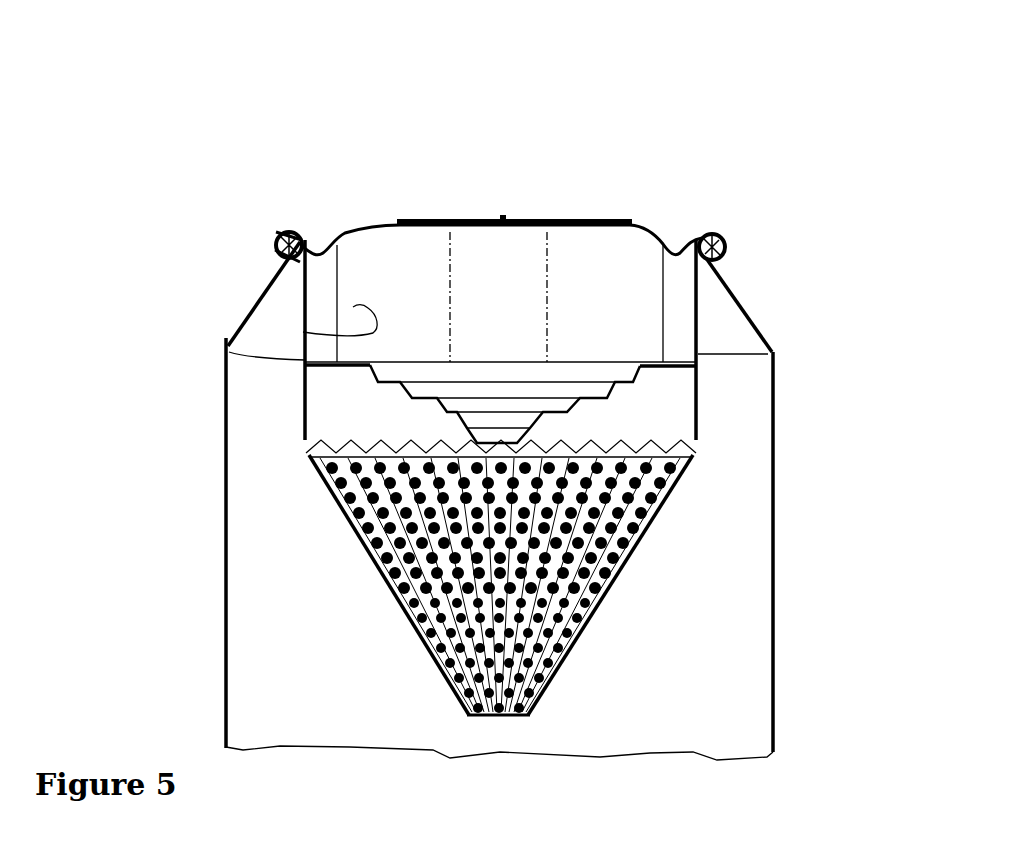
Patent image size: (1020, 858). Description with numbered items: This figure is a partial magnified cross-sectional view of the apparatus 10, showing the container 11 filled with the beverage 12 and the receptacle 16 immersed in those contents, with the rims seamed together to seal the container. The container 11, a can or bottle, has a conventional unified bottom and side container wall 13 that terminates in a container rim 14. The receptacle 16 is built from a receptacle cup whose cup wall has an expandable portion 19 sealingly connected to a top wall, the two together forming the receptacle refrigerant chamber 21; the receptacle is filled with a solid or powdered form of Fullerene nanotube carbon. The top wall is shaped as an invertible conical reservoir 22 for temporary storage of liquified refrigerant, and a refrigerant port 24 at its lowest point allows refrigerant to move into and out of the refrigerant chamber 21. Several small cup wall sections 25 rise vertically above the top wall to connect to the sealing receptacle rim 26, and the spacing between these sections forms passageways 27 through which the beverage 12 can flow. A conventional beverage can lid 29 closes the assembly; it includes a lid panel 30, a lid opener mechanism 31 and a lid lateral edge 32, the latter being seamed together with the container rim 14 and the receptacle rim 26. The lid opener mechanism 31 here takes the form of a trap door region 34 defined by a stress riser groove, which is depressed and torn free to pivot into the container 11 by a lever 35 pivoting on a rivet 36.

The apparatus 10 is at (716, 103).
The container 11 is at (752, 320).
The beverage 12 is at (737, 687).
The container wall 13 is at (777, 488).
The container rim 14 is at (273, 252).
The receptacle 16 is at (303, 383).
The expandable portion 19 is at (610, 580).
The receptacle refrigerant chamber 21 is at (345, 410).
The invertible conical reservoir 22 is at (437, 407).
The refrigerant port 24 is at (503, 443).
The small cup wall sections 25 is at (557, 221).
The sealing receptacle rim 26 is at (282, 237).
The passageways 27 is at (303, 332).
The beverage can lid 29 is at (713, 232).
The lid panel 30 is at (340, 233).
The lid opener mechanism 31 is at (440, 224).
The lid lateral edge 32 is at (280, 228).
The trap door region 34 is at (640, 222).
The lever 35 is at (565, 222).
The rivet 36 is at (503, 217).